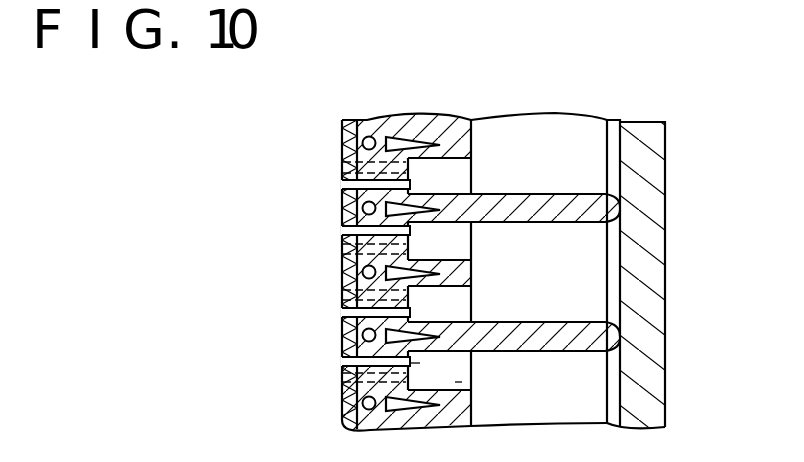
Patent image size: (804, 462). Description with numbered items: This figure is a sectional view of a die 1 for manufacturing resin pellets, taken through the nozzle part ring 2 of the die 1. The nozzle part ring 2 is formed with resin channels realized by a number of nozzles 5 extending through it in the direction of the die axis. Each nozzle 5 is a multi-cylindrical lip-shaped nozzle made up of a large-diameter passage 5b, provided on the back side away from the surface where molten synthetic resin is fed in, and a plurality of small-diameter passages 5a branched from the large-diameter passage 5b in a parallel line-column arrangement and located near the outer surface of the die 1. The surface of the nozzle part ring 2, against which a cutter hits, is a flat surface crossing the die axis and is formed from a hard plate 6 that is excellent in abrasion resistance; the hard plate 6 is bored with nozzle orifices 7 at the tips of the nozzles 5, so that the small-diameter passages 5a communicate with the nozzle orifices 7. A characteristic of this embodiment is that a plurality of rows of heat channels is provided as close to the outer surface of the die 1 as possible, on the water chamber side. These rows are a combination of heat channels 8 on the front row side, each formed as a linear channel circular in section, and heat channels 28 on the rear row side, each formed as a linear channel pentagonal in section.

The die 1 is at (684, 163).
The nozzle part ring 2 is at (557, 128).
The nozzle 5 is at (538, 357).
The small-diameter passage 5a is at (420, 363).
The large-diameter passage 5b is at (460, 382).
The hard plate 6 is at (342, 137).
The nozzle orifice 7 is at (342, 184).
The heat channel 8 is at (369, 136).
The heat channel 28 is at (403, 138).